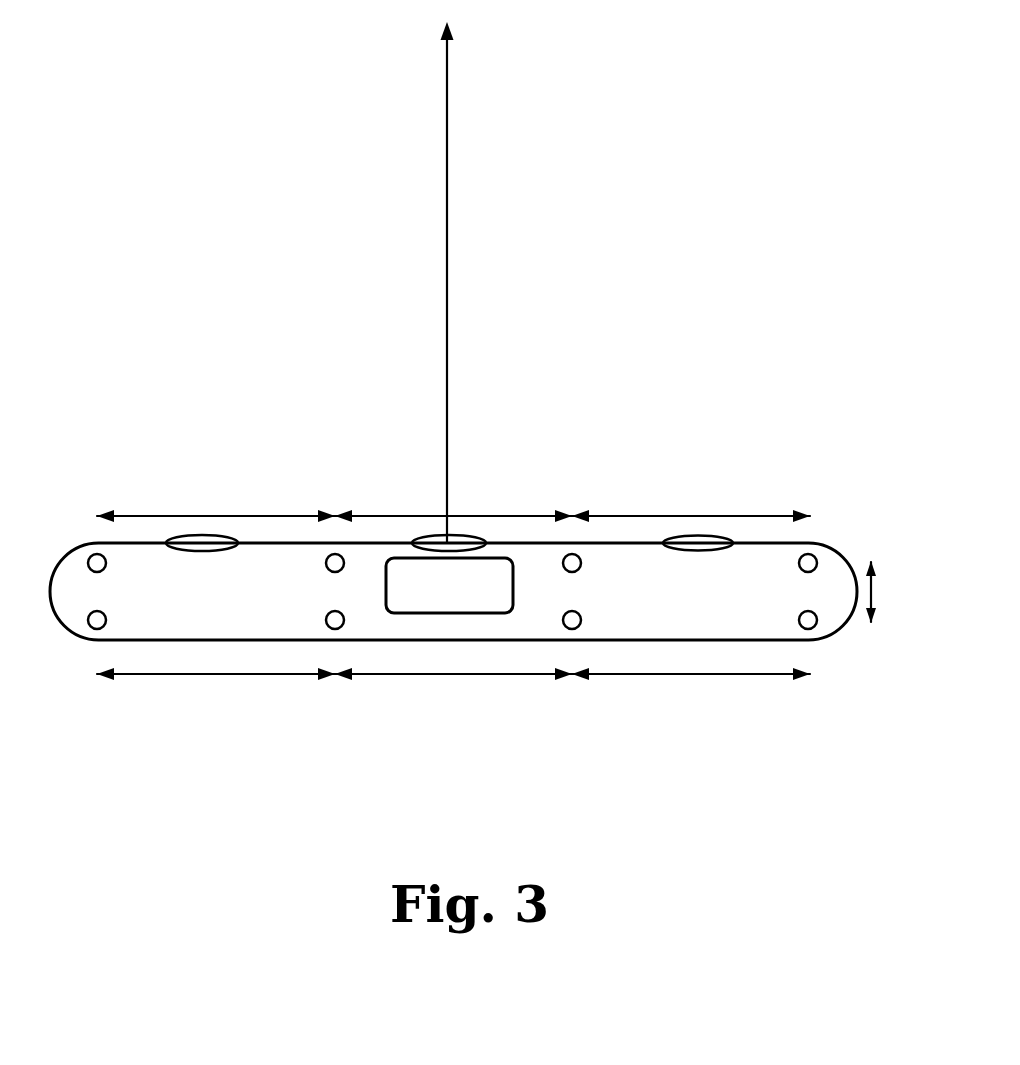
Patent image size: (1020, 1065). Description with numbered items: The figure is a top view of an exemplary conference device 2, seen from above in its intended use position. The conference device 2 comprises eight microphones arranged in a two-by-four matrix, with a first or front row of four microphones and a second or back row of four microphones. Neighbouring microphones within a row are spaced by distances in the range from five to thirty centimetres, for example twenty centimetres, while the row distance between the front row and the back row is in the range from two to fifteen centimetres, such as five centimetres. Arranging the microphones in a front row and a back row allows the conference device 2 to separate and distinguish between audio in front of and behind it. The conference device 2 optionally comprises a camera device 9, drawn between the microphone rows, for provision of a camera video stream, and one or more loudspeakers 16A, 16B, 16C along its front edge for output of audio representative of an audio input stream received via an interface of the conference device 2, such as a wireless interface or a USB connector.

The conference device 2 is at (668, 217).
The camera device 9 is at (430, 614).
The loudspeaker 16A is at (205, 537).
The loudspeaker 16B is at (436, 538).
The loudspeaker 16C is at (700, 551).